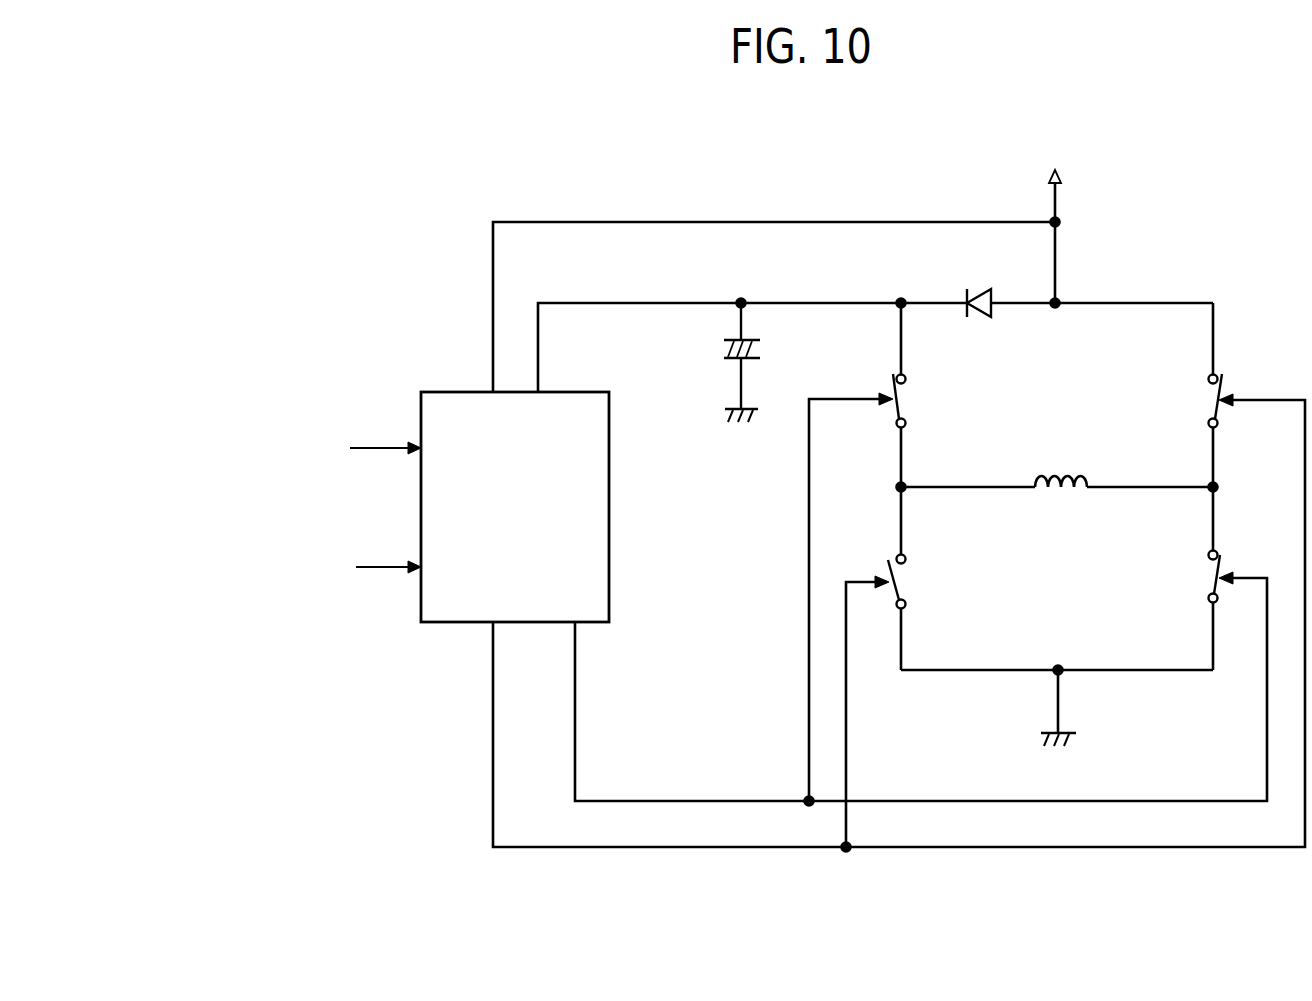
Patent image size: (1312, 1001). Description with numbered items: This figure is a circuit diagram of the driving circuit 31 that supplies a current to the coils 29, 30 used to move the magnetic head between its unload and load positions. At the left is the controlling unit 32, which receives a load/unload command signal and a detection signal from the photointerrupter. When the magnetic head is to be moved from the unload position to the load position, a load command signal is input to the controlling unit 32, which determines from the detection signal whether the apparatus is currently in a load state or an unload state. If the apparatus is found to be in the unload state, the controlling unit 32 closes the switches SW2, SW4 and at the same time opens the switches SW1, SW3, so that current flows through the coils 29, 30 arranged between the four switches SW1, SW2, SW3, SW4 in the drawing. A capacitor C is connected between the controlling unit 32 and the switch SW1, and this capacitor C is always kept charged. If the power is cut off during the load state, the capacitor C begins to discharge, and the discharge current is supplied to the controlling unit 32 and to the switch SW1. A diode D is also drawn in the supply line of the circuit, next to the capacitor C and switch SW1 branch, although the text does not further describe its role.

The driving circuit 31 is at (812, 154).
The controlling unit 32 is at (609, 433).
The coil 29 is at (1047, 435).
The coil 30 is at (1047, 464).
The switch SW1 is at (930, 401).
The switch SW2 is at (1182, 401).
The switch SW3 is at (1181, 577).
The switch SW4 is at (925, 582).
The capacitor C is at (755, 362).
The diode D is at (979, 287).